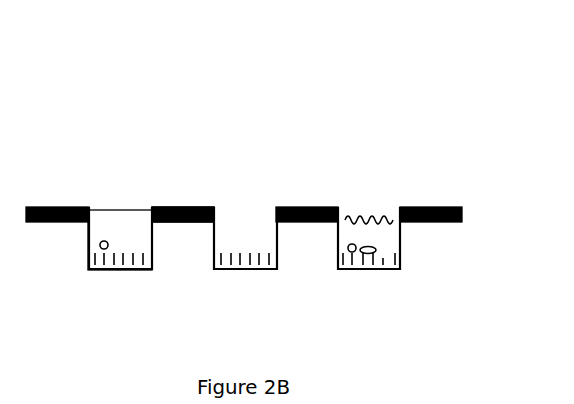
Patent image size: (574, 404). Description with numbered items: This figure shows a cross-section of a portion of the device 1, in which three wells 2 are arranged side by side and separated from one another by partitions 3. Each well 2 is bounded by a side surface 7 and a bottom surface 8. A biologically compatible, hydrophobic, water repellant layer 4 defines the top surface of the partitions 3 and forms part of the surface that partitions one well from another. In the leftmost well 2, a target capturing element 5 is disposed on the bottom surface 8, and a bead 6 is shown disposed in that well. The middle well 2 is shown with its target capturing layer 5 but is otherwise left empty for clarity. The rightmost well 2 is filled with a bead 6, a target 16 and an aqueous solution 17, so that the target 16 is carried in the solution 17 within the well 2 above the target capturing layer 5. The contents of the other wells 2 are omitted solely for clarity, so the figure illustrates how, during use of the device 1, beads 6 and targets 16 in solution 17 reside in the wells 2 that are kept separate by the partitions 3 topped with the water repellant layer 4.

The device 1 is at (99, 84).
The well 2 is at (110, 221).
The partitions 3 is at (332, 194).
The hydrophobic water repellant layer 4 is at (183, 223).
The target capturing element 5 is at (270, 248).
The bead 6 is at (107, 242).
The side surface 7 is at (89, 238).
The bottom surface 8 is at (360, 277).
The target 16 is at (376, 252).
The solution 17 is at (386, 238).